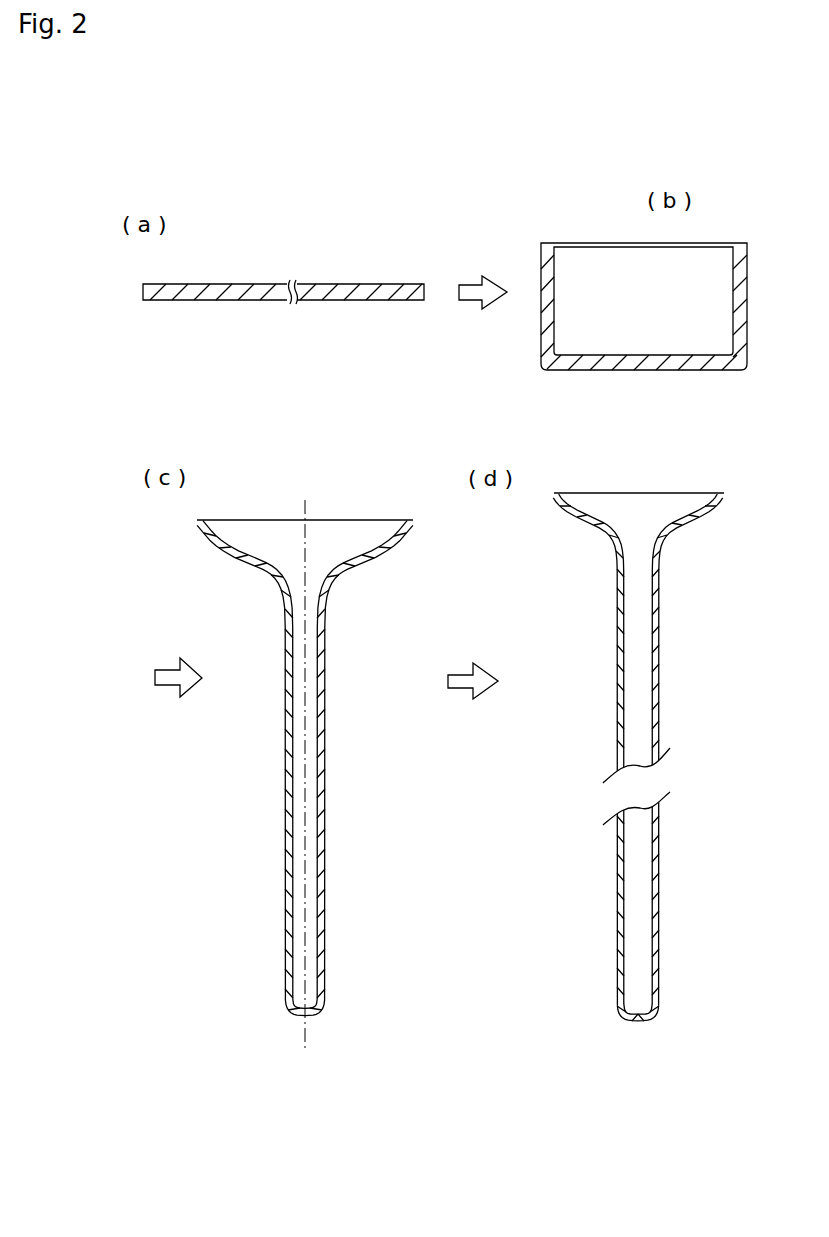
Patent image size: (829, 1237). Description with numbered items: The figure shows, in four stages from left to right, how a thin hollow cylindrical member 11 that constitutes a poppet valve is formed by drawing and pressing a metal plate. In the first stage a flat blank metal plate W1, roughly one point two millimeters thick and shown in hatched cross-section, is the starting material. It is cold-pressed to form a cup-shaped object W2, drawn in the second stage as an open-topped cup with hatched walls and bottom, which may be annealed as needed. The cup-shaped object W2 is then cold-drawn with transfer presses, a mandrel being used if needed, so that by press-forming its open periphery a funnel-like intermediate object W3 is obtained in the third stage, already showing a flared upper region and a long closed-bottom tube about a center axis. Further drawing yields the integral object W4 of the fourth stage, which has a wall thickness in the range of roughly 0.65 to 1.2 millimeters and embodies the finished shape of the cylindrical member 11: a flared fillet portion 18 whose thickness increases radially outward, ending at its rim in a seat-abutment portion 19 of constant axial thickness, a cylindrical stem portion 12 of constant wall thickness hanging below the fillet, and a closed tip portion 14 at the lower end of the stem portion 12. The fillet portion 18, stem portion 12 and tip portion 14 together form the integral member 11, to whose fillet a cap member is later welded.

The blank metal plate W1 is at (251, 281).
The cup-shaped object W2 is at (611, 241).
The intermediate object W3 is at (283, 733).
The integral object W4 is at (625, 774).
The thin hollow cylindrical member 11 is at (625, 774).
The stem portion 12 is at (660, 652).
The tip portion 14 is at (628, 1021).
The fillet portion 18 is at (664, 535).
The seat-abutment portion 19 is at (559, 501).